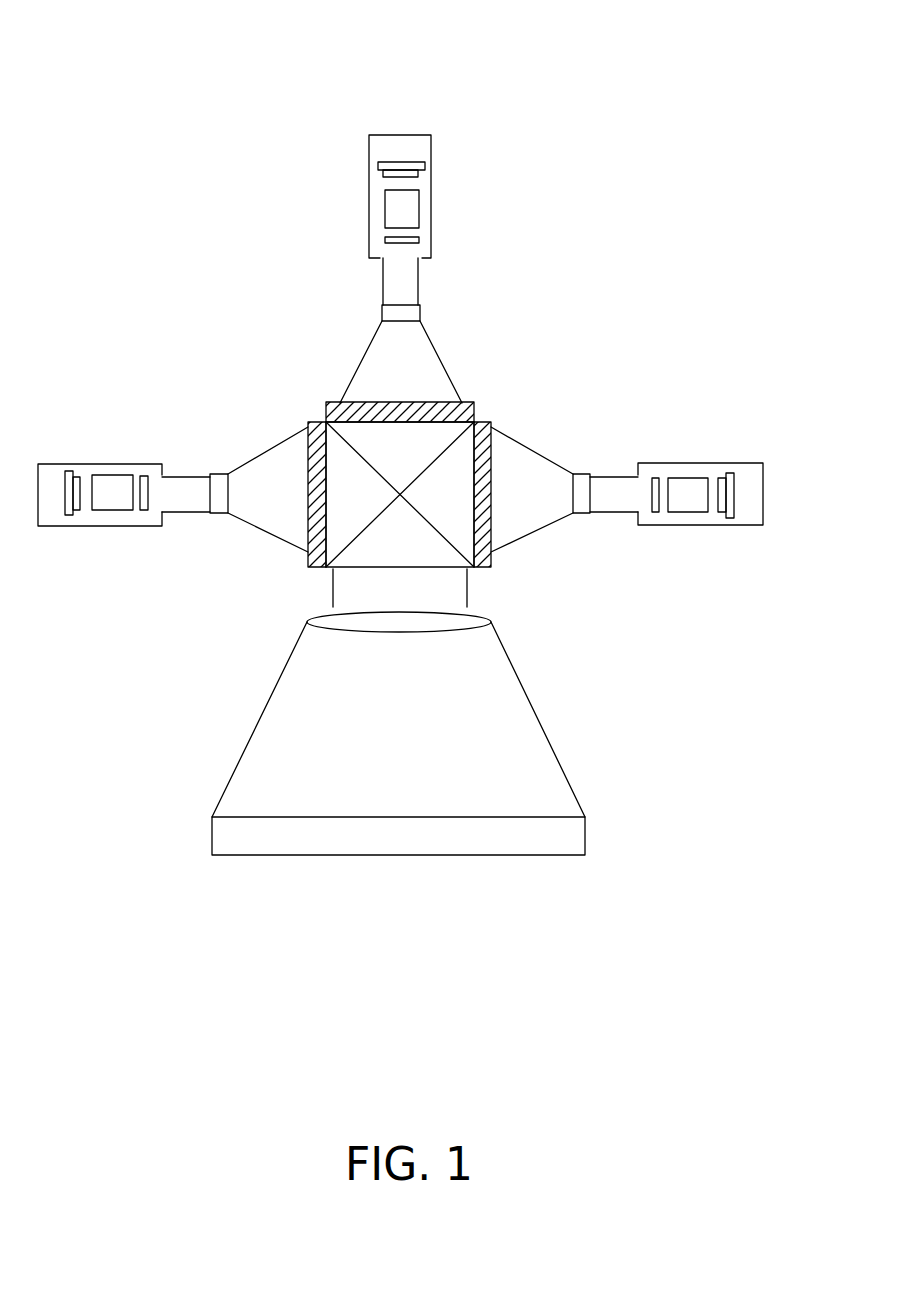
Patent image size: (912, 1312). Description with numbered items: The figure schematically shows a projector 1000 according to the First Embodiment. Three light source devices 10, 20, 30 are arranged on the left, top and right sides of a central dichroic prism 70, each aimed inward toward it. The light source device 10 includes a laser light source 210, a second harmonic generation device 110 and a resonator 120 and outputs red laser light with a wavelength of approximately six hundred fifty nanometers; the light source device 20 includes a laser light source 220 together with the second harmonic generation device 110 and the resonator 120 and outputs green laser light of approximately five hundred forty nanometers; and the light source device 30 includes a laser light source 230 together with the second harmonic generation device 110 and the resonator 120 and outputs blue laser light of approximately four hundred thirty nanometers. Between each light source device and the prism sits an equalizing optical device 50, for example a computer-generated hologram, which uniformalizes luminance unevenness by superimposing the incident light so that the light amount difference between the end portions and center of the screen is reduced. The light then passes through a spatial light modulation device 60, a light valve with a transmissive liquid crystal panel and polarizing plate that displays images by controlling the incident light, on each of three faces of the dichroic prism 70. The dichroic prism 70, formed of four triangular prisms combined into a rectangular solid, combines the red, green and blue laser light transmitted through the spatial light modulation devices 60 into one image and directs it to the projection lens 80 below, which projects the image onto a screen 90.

The projector 1000 is at (143, 38).
The light source device 10 is at (117, 526).
The light source device 20 is at (369, 210).
The light source device 30 is at (688, 463).
The equalizing optical device 50 is at (420, 312).
The spatial light modulation device 60 is at (326, 420).
The dichroic prism 70 is at (357, 568).
The projection lens 80 is at (491, 622).
The screen 90 is at (585, 832).
The second harmonic generation device 110 is at (419, 207).
The resonator 120 is at (419, 240).
The laser light source 210 is at (68, 470).
The laser light source 220 is at (426, 163).
The laser light source 230 is at (733, 518).